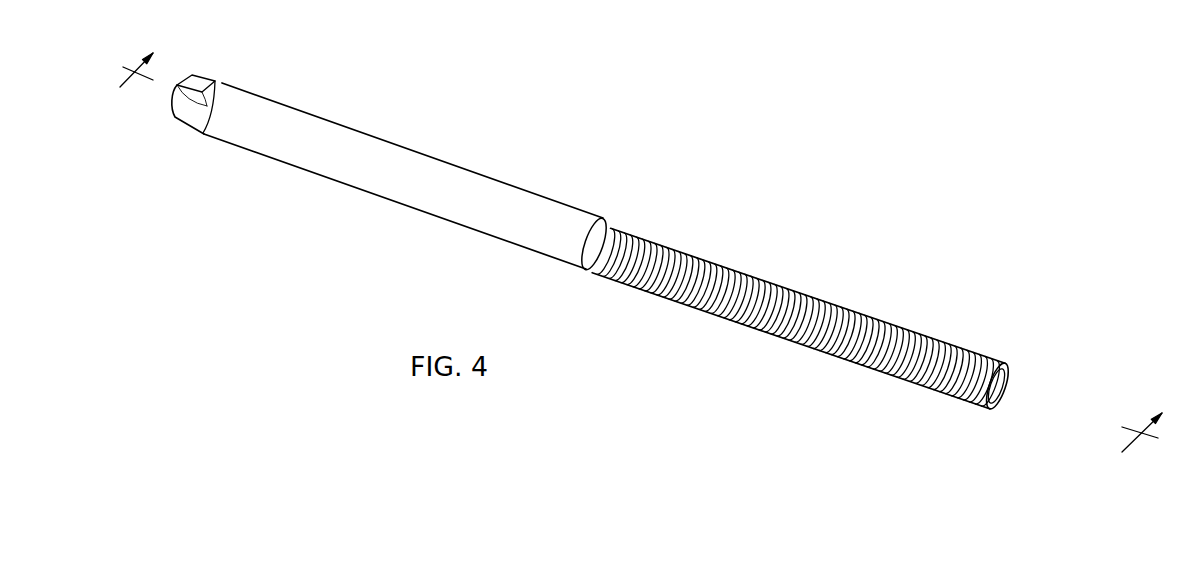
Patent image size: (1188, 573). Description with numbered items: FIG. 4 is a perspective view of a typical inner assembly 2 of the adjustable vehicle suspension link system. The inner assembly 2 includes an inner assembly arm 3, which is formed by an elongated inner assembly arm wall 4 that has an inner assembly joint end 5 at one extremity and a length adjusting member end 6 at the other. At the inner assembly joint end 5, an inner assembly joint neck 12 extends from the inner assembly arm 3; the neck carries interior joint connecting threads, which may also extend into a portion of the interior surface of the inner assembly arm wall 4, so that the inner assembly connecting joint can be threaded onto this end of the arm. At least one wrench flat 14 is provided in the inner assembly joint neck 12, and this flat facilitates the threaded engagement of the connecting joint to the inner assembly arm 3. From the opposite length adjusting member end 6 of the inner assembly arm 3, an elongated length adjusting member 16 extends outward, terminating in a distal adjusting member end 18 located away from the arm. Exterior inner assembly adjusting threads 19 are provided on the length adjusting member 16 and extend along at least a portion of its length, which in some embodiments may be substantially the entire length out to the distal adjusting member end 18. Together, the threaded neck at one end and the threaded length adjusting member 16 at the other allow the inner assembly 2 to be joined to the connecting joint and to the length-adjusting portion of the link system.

The inner assembly 2 is at (612, 175).
The inner assembly arm 3 is at (470, 143).
The inner assembly arm wall 4 is at (512, 206).
The inner assembly joint end 5 is at (176, 87).
The length adjusting member end 6 is at (584, 270).
The inner assembly joint neck 12 is at (193, 112).
The wrench flat 14 is at (198, 80).
The length adjusting member 16 is at (858, 298).
The distal adjusting member end 18 is at (1003, 383).
The inner assembly adjusting threads 19 is at (825, 350).